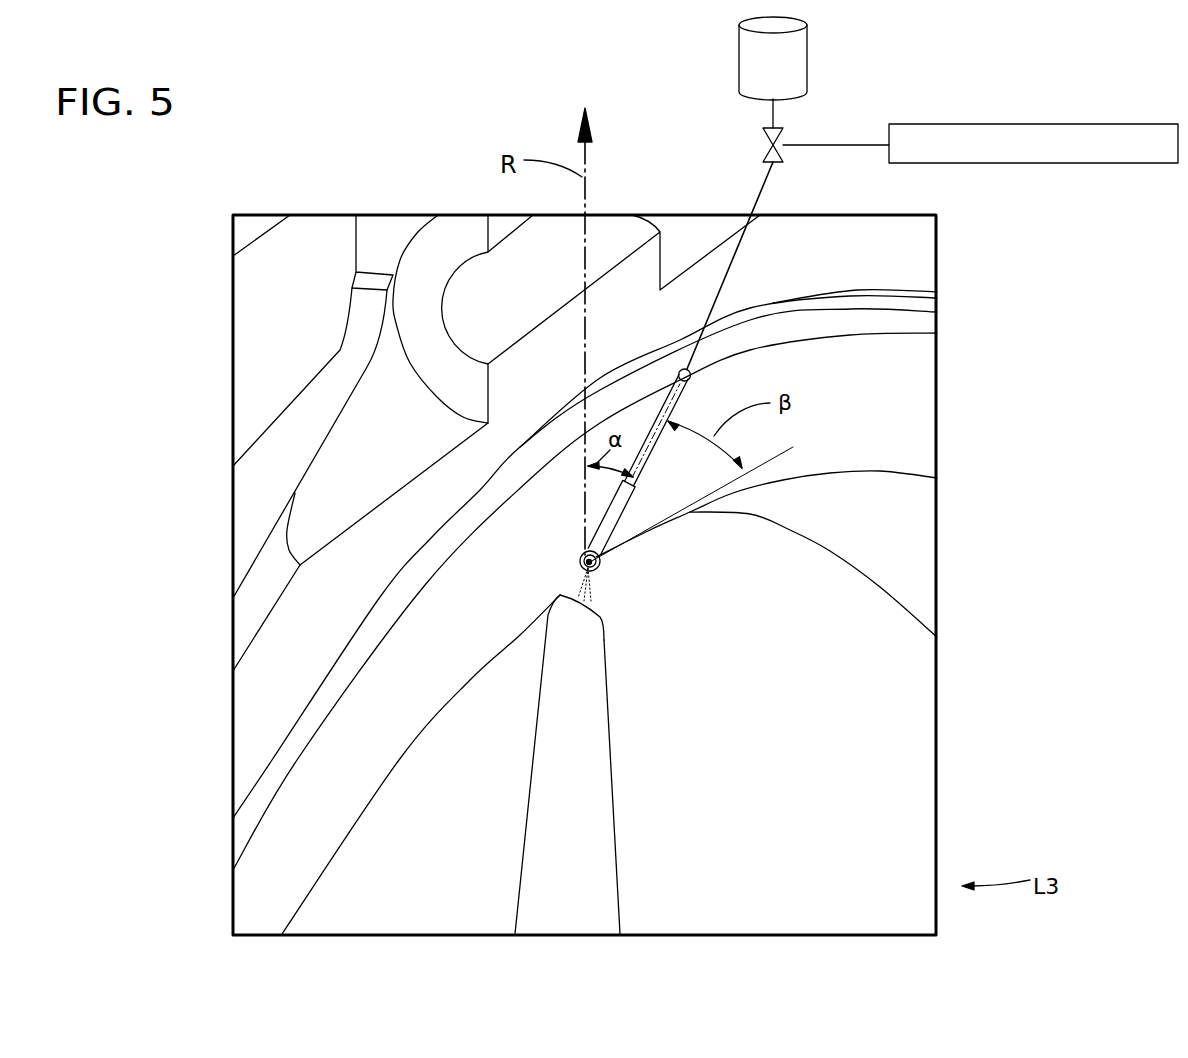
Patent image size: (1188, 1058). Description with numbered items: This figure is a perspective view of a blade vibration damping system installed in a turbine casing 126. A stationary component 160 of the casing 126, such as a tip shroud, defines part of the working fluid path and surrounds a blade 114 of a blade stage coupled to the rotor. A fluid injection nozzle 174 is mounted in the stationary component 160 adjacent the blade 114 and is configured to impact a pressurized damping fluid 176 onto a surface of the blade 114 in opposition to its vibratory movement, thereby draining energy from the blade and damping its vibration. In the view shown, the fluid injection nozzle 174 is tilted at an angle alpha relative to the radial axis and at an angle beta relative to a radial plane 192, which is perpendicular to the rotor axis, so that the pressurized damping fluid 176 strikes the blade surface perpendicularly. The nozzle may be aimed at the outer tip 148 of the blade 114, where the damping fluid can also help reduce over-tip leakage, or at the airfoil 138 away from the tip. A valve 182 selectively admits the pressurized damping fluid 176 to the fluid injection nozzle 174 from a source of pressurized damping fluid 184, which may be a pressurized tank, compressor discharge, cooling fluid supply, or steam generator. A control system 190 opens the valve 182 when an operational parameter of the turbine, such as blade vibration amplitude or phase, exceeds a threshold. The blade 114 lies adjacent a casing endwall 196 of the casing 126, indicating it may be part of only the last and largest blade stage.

The blade 114 is at (583, 706).
The casing 126 is at (890, 348).
The airfoil 138 is at (593, 765).
The outer tip 148 is at (580, 646).
The stationary component 160 is at (900, 371).
The fluid injection nozzle 174 is at (628, 528).
The pressurized damping fluid 176 is at (594, 598).
The valve 182 is at (761, 129).
The source of pressurized damping fluid 184 is at (793, 72).
The control system 190 is at (1157, 157).
The radial plane 192 is at (717, 488).
The casing endwall 196 is at (866, 797).